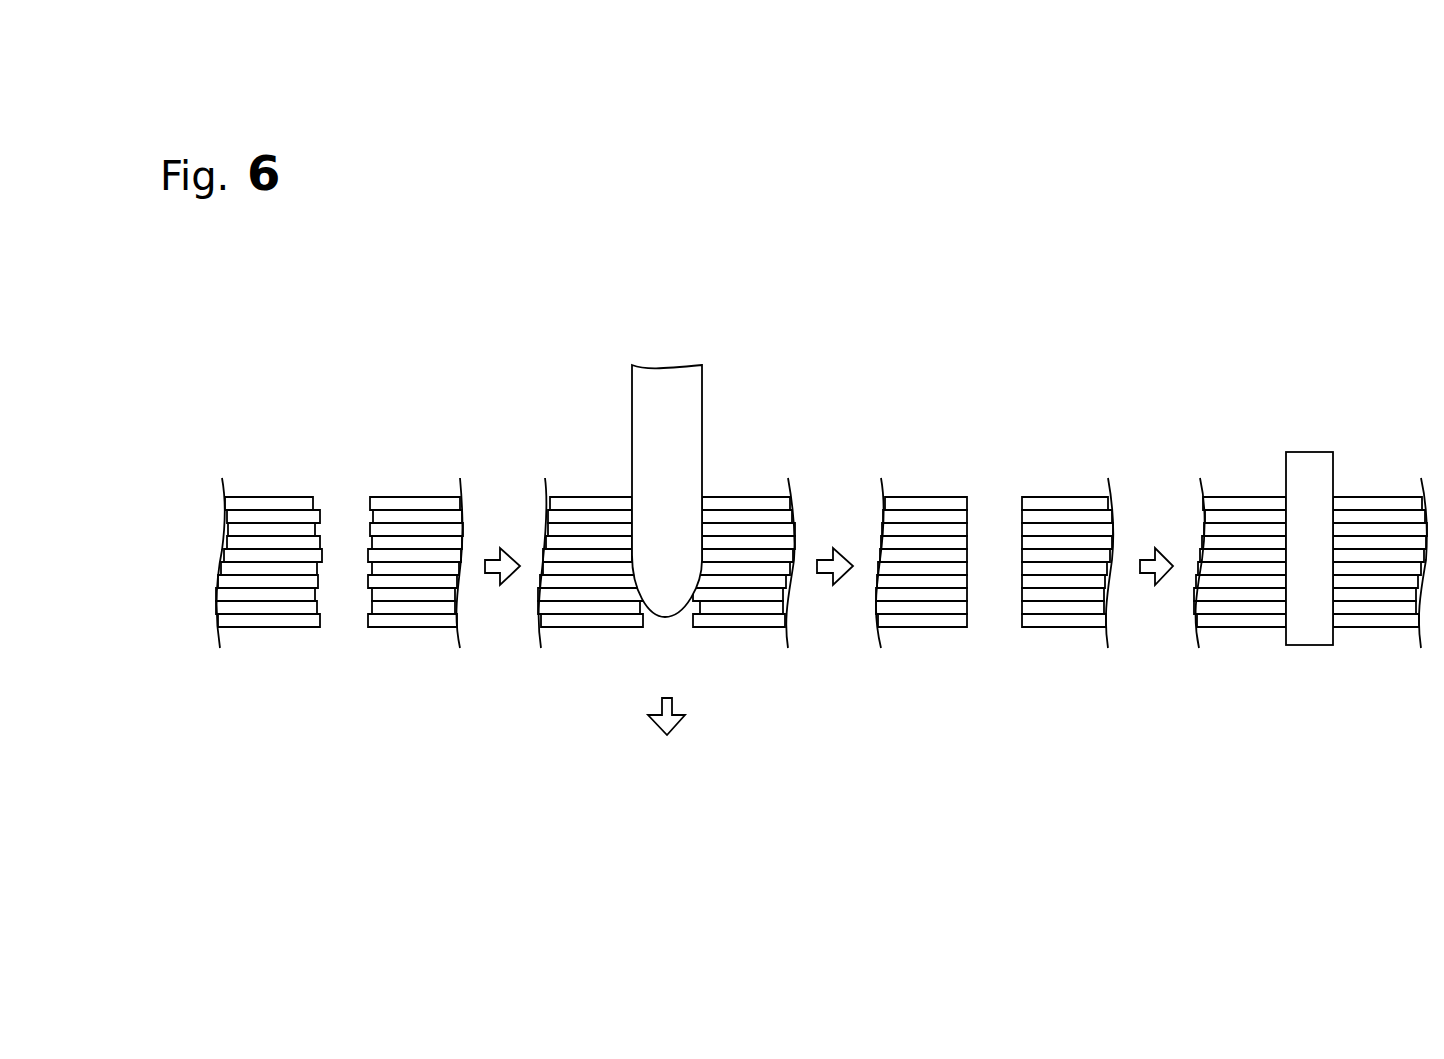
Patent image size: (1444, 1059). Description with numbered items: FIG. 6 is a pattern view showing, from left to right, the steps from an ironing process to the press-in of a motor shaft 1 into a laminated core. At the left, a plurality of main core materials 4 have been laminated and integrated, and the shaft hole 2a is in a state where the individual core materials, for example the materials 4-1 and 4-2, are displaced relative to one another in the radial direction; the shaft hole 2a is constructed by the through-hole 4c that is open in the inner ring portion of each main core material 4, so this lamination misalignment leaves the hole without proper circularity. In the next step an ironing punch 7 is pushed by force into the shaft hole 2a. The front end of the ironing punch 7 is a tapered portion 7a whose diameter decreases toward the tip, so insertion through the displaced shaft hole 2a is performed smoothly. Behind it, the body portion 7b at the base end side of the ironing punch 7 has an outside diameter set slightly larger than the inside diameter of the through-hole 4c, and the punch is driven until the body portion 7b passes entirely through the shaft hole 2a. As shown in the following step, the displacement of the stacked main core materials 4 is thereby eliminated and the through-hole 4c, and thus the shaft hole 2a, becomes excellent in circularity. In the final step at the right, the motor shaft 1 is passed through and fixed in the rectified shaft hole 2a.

The motor shaft 1 is at (1307, 624).
The shaft hole 2a is at (1330, 552).
The main core material 4 is at (765, 562).
The main core material 4-1 is at (248, 502).
The main core material 4-2 is at (283, 517).
The through-hole 4c is at (370, 527).
The ironing punch 7 is at (716, 557).
The tapered portion 7a is at (670, 585).
The body portion 7b is at (685, 447).